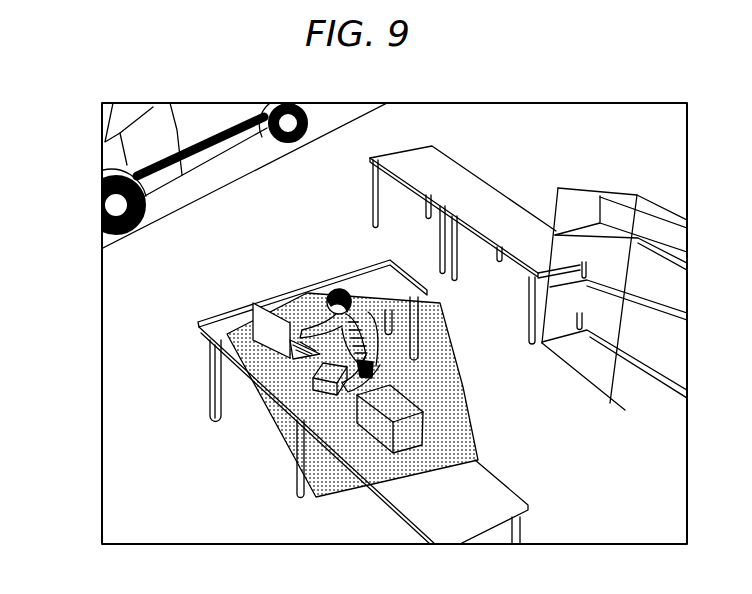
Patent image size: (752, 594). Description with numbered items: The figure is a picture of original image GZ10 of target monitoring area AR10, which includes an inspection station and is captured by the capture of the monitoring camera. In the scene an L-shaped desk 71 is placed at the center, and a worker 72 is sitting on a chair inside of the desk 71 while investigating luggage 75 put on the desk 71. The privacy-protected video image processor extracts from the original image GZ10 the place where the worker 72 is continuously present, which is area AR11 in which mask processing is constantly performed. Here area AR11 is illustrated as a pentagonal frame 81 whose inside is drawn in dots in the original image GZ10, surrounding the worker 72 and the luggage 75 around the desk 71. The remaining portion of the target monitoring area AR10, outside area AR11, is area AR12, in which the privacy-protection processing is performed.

The original image GZ10 is at (555, 103).
The L-shaped desk 71 is at (218, 325).
The worker 72 is at (347, 290).
The luggage 75 is at (308, 388).
The pentagonal frame 81 is at (463, 387).
The target monitoring area AR10 is at (576, 437).
The area in which mask processing is constantly performed AR11 is at (298, 467).
The area in which privacy-protection processing is performed AR12 is at (142, 378).